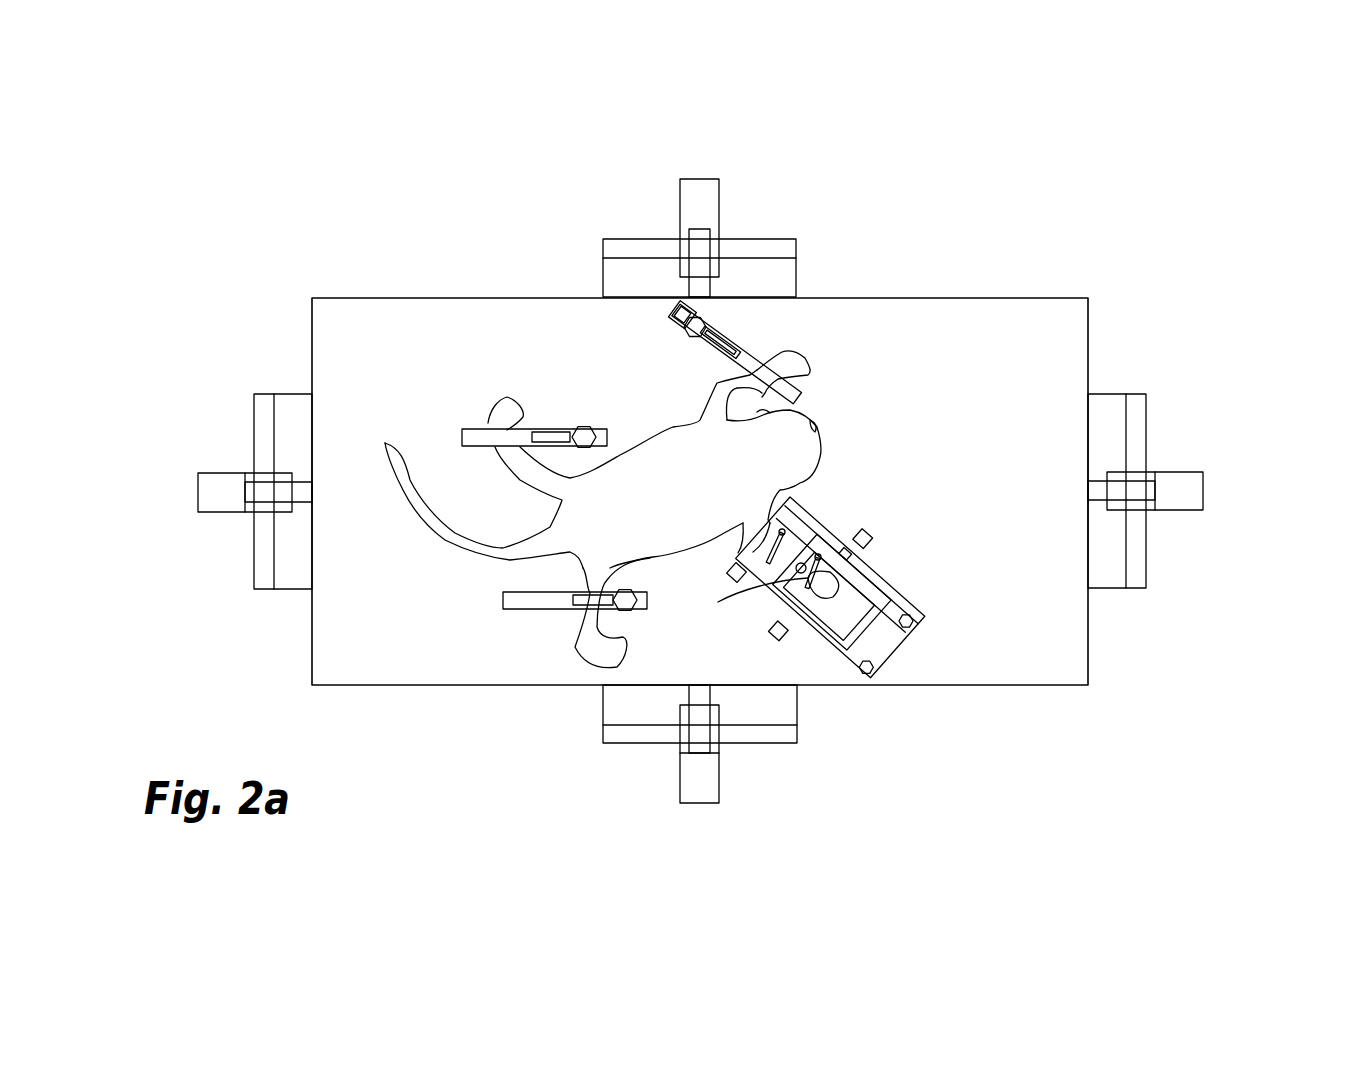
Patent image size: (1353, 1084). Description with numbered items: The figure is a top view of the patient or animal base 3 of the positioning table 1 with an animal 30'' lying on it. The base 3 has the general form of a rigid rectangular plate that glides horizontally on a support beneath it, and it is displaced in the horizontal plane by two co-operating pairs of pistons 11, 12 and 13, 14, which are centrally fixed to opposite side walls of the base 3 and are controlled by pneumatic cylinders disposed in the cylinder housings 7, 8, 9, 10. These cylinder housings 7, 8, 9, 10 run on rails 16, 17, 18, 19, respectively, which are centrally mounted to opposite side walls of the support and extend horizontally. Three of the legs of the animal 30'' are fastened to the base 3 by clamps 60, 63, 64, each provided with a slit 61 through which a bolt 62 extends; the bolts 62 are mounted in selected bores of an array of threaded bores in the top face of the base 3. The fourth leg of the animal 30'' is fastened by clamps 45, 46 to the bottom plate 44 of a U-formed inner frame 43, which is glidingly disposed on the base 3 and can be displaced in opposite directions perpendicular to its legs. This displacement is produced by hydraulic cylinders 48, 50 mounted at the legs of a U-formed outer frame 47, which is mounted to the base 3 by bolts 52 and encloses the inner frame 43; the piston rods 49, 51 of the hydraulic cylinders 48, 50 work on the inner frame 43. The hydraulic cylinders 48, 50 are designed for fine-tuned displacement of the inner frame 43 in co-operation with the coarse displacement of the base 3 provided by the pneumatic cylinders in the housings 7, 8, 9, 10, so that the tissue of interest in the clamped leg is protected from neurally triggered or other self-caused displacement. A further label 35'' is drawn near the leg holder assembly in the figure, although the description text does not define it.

The positioning table 1 is at (878, 262).
The patient or animal base 3 is at (371, 380).
The cylinder housing 7 is at (690, 775).
The cylinder housing 8 is at (703, 208).
The cylinder housing 9 is at (1177, 497).
The cylinder housing 10 is at (222, 495).
The piston 11 is at (698, 695).
The piston 12 is at (700, 288).
The piston 13 is at (1097, 490).
The piston 14 is at (305, 483).
The rail 16 is at (660, 733).
The rail 17 is at (627, 247).
The rail 18 is at (1133, 547).
The rail 19 is at (267, 543).
The animal 30'' is at (737, 437).
The limb holder 35'' is at (1000, 585).
The inner frame 43 is at (877, 607).
The bottom plate 44 is at (800, 547).
The clamp 45 is at (802, 637).
The clamp 46 is at (732, 580).
The outer frame 47 is at (873, 637).
The hydraulic cylinder 48 is at (780, 637).
The piston rod 49 is at (797, 613).
The hydraulic cylinder 50 is at (845, 555).
The piston rod 51 is at (868, 543).
The bolt 52 is at (877, 673).
The clamp 60 is at (475, 440).
The slit 61 is at (553, 436).
The bolt 62 is at (585, 428).
The clamp 63 is at (503, 600).
The clamp 64 is at (745, 365).